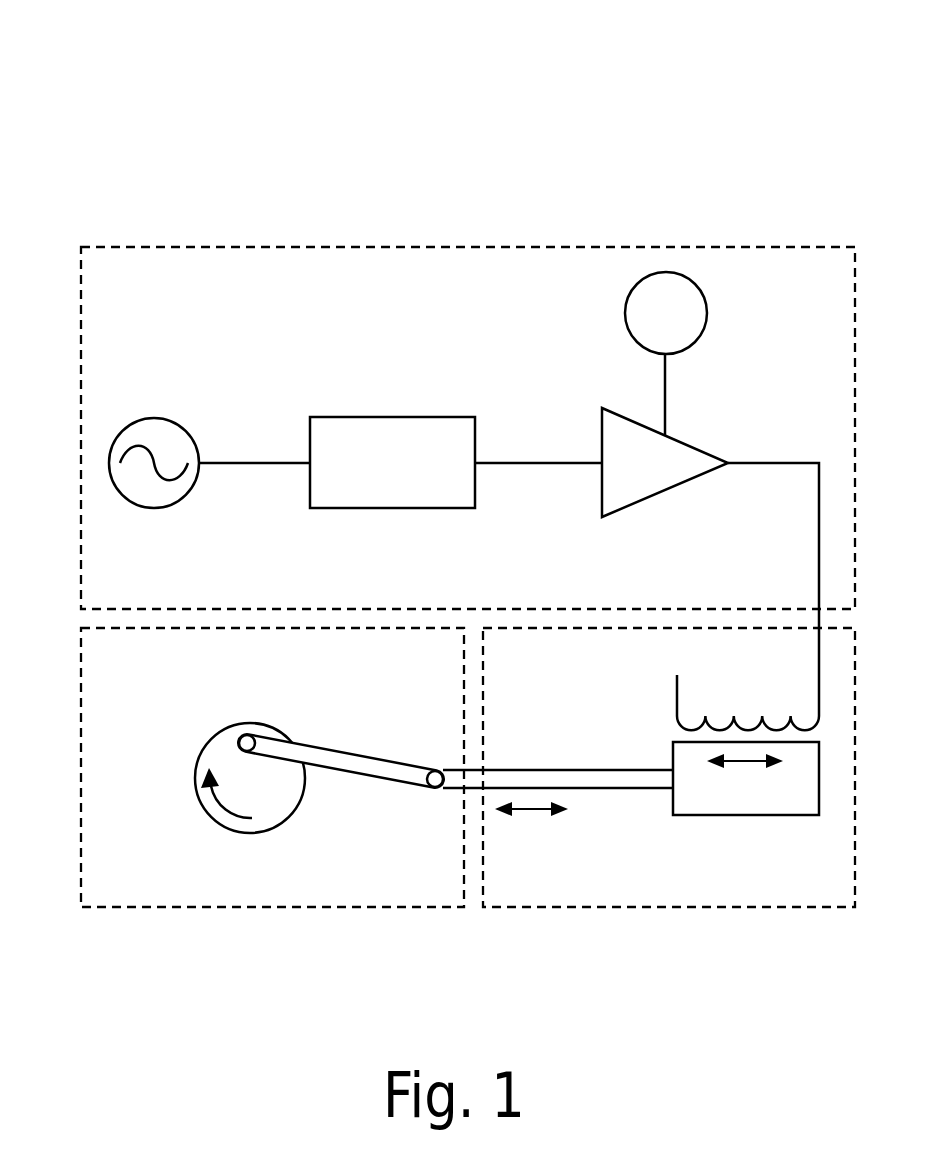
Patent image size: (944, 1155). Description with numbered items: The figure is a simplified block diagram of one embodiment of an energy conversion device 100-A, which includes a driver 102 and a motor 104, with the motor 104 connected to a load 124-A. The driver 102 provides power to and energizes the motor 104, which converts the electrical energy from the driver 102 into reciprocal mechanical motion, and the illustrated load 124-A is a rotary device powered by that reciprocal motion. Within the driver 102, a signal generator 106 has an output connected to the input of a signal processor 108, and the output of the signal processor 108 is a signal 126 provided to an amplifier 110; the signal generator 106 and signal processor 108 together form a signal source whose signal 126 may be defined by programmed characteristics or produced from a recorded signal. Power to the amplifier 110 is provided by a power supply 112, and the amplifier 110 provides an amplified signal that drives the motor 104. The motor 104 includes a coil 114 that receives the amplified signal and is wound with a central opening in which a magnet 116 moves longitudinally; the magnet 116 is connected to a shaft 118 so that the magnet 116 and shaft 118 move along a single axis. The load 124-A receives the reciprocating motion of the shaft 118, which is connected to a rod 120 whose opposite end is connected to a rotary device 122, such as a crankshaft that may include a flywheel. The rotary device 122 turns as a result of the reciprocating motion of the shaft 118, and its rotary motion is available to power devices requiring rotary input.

The energy conversion device 100-A is at (138, 70).
The driver 102 is at (172, 243).
The motor 104 is at (594, 917).
The signal generator 106 is at (154, 508).
The signal processor 108 is at (397, 508).
The amplifier 110 is at (642, 503).
The power supply 112 is at (625, 313).
The coil 114 is at (670, 690).
The magnet 116 is at (735, 815).
The shaft 118 is at (620, 788).
The rod 120 is at (352, 772).
The rotary device 122 is at (198, 797).
The load 124-A is at (202, 917).
The signal 126 is at (560, 463).